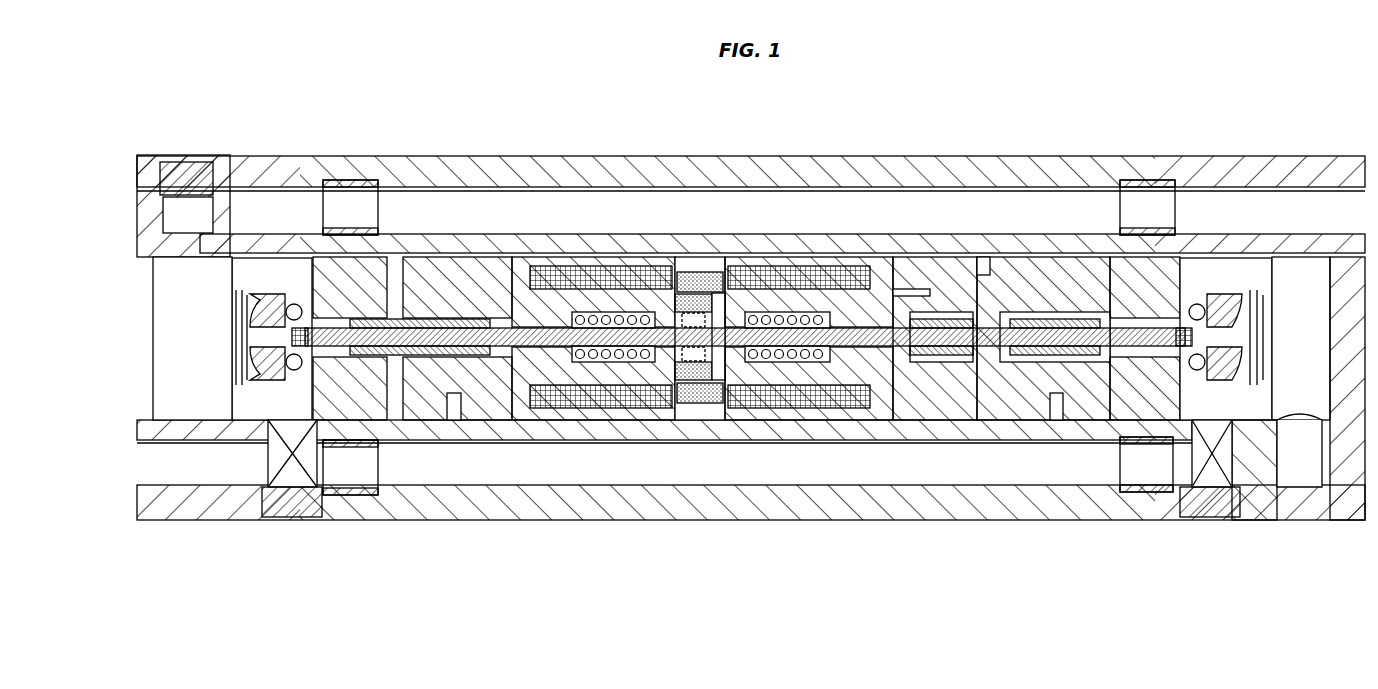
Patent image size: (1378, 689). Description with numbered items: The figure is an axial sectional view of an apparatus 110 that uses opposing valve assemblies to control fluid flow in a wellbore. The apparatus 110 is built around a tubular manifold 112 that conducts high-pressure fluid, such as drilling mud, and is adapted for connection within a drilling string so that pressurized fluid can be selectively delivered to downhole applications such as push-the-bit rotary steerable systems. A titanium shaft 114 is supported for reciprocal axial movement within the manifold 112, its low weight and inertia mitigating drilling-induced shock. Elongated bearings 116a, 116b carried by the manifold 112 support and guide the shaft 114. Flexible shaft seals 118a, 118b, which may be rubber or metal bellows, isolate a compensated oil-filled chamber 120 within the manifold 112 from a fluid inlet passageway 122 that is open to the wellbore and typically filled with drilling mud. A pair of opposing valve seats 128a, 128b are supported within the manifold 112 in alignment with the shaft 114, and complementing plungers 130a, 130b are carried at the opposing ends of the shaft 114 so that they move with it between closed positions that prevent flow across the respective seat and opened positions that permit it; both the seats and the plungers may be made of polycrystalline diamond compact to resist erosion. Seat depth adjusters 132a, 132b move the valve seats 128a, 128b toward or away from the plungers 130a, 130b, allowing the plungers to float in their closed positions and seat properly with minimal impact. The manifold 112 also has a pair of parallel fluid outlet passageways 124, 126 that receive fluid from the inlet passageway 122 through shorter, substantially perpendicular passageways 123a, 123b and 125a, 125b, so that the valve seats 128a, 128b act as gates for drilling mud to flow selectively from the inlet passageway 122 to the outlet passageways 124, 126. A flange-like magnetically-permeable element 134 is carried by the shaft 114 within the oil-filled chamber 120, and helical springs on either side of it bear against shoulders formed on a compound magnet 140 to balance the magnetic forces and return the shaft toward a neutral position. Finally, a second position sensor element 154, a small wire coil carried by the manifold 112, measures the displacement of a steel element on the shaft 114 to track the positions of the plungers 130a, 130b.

The apparatus 110 is at (609, 140).
The tubular manifold 112 is at (457, 157).
The shaft 114 is at (435, 345).
The elongated bearing 116a is at (547, 258).
The elongated bearing 116b is at (852, 273).
The flexible shaft seal 118a is at (407, 312).
The flexible shaft seal 118b is at (1085, 265).
The compensated oil-filled chamber 120 is at (722, 300).
The fluid inlet passageway 122 is at (470, 468).
The perpendicular passageway 123a is at (300, 392).
The perpendicular passageway 123b is at (1197, 387).
The fluid outlet passageway 124 is at (798, 215).
The perpendicular passageway 125a is at (190, 395).
The perpendicular passageway 125b is at (1308, 390).
The fluid outlet passageway 126 is at (1338, 472).
The valve seat 128a is at (290, 305).
The valve seat 128b is at (1220, 297).
The plunger 130a is at (306, 327).
The plunger 130b is at (1187, 320).
The seat depth adjuster 132a is at (240, 315).
The seat depth adjuster 132b is at (1243, 318).
The magnetically-permeable element 134 is at (693, 298).
The compound magnet 140 is at (701, 340).
The second position sensor element 154 is at (934, 368).